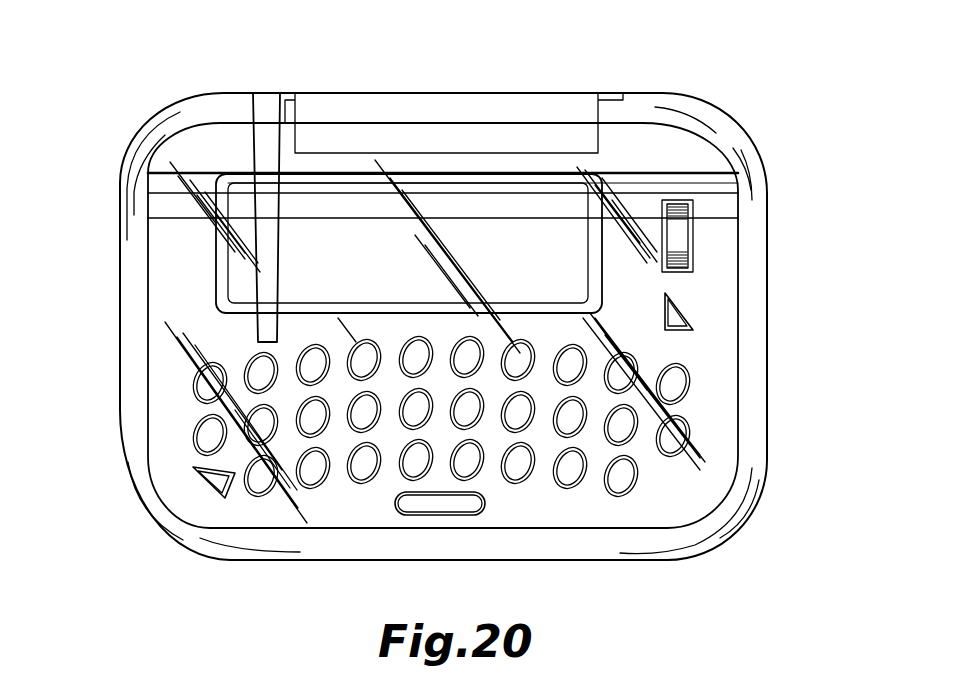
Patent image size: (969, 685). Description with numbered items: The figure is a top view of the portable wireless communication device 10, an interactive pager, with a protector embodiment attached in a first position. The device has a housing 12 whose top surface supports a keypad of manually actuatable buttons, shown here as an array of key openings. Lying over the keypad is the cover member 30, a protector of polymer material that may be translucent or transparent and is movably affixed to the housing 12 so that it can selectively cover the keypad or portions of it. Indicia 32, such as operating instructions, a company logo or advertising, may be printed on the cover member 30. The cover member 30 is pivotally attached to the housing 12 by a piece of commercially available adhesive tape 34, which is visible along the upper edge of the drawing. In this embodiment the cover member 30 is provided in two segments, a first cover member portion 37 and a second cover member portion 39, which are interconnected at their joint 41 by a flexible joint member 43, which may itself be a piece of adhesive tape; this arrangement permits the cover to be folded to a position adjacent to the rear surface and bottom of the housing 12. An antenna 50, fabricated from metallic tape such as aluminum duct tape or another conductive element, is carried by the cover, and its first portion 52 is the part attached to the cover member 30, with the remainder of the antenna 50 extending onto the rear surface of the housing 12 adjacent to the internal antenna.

The portable wireless communication device 10 is at (782, 347).
The housing 12 is at (750, 157).
The cover member 30 is at (662, 513).
The indicia 32 is at (535, 528).
The adhesive tape 34 is at (562, 103).
The first cover member portion 37 is at (647, 140).
The second cover member portion 39 is at (715, 417).
The joint 41 is at (640, 190).
The flexible joint member 43 is at (713, 208).
The antenna 50 is at (253, 276).
The first portion of antenna 52 is at (263, 197).